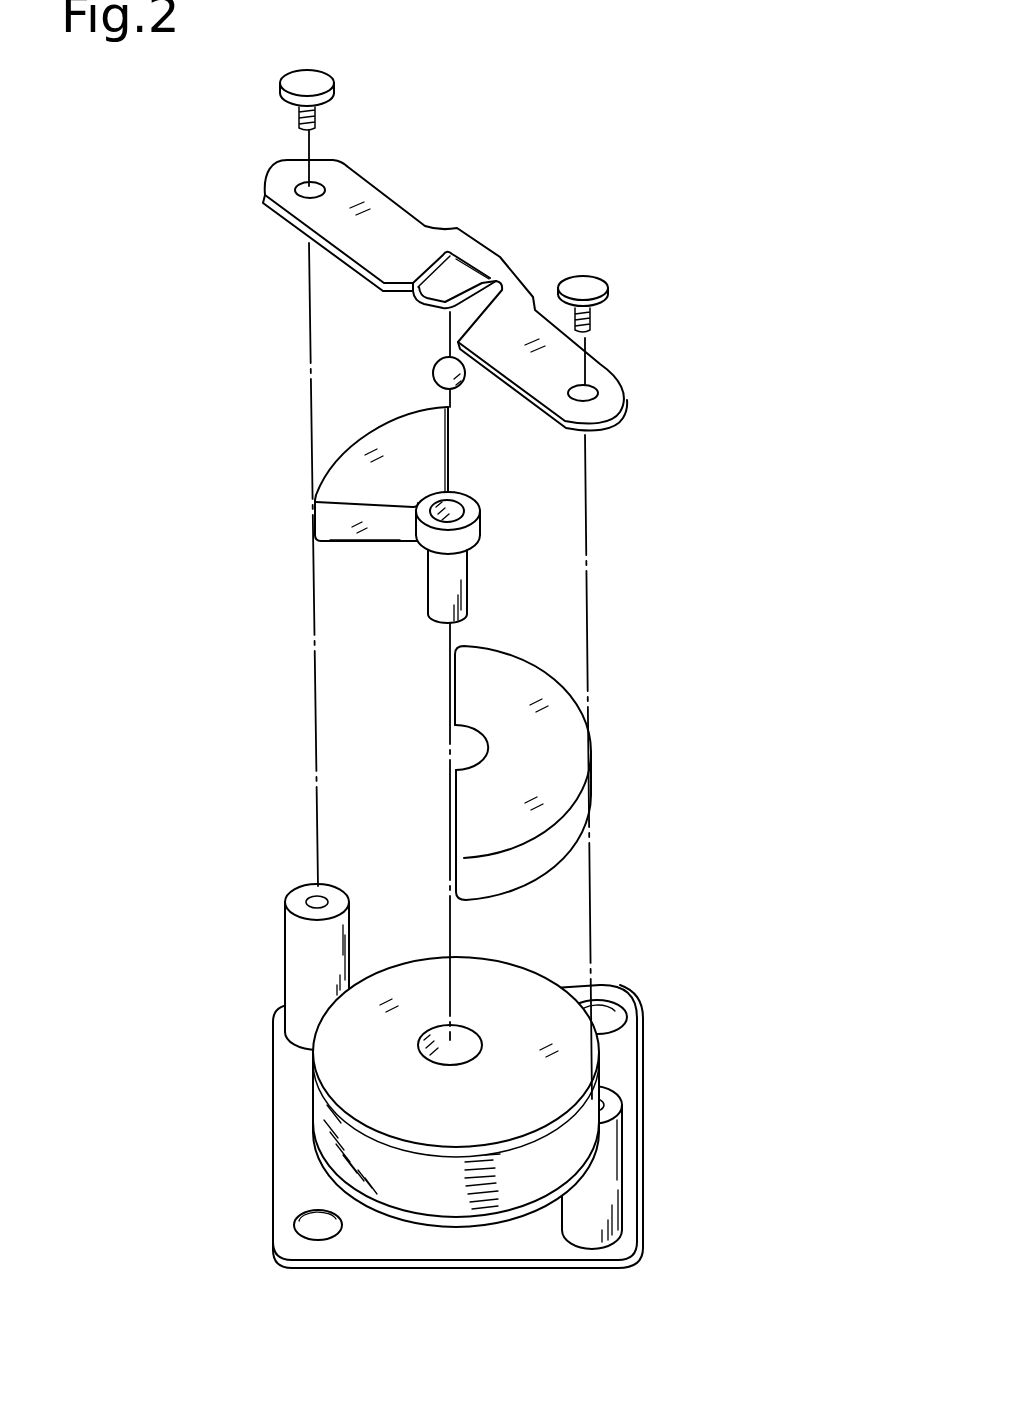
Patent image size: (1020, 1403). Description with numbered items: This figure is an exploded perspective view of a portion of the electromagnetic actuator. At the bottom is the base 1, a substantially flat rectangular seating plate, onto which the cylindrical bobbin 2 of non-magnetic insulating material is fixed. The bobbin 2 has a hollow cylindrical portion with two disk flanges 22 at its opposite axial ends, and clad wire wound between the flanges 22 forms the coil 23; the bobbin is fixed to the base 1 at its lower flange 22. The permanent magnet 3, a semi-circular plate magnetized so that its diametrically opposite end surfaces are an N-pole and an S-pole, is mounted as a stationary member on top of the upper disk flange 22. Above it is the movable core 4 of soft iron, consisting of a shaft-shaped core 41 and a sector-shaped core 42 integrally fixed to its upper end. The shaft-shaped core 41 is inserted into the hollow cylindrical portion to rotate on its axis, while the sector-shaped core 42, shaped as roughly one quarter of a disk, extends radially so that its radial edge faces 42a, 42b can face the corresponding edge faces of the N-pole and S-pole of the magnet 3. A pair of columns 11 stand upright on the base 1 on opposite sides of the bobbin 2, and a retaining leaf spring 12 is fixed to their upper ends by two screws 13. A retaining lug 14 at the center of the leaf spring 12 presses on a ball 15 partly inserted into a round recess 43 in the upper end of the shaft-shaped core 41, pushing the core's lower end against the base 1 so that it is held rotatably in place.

The base (seating plate) 1 is at (597, 1262).
The cylindrical bobbin 2 is at (411, 1140).
The permanent magnet 3 is at (563, 773).
The movable core 4 is at (446, 515).
The columns 11 is at (300, 948).
The retaining leaf spring 12 is at (445, 295).
The screws 13 is at (300, 83).
The retaining lug 14 is at (439, 276).
The ball 15 is at (438, 370).
The disk flanges 22 is at (483, 1140).
The coil 23 is at (417, 1187).
The shaft-shaped core 41 is at (455, 588).
The sector-shaped core 42 is at (403, 515).
The radial edge face 42a is at (453, 443).
The radial edge face 42b is at (386, 534).
The round recess 43 is at (462, 500).